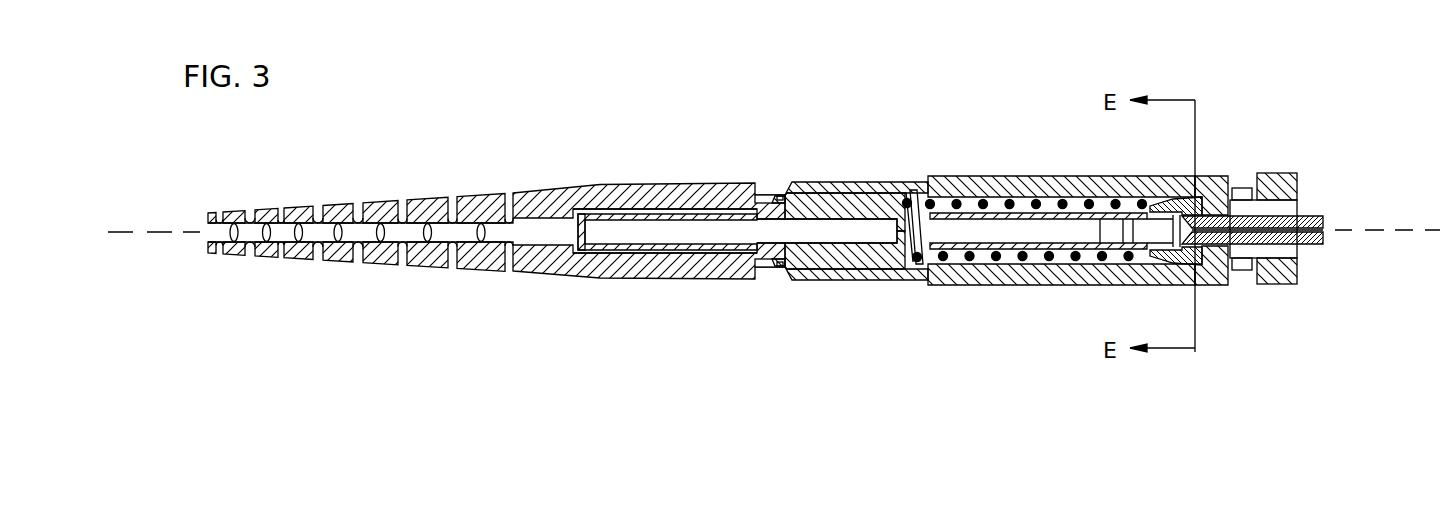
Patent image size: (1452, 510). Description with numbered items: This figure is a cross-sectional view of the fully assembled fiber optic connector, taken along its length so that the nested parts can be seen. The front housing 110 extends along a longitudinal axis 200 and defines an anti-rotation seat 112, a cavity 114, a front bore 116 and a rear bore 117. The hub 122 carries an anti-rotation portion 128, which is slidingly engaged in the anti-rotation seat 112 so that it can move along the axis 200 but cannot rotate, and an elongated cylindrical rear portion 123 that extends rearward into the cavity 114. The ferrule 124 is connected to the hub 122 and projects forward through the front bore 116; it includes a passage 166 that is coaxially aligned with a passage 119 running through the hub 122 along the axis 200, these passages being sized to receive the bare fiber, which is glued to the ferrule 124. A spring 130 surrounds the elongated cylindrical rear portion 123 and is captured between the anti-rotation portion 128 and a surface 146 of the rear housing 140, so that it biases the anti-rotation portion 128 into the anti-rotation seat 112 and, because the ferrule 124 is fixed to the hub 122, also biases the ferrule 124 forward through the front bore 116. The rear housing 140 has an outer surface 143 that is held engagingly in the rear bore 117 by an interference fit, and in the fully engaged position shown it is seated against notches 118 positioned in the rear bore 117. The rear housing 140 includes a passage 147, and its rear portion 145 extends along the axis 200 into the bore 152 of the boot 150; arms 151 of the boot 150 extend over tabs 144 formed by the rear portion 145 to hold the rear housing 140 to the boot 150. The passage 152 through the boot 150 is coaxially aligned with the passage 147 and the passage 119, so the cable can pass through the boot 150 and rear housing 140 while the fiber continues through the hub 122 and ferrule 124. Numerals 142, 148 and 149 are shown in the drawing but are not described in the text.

The front housing 110 is at (1040, 282).
The anti-rotation seat 112 is at (1200, 200).
The cavity 114 is at (1101, 203).
The front bore 116 is at (1292, 206).
The rear bore 117 is at (916, 218).
The notches 118 is at (908, 192).
The passage 119 is at (1072, 238).
The hub 122 is at (1147, 251).
The elongated cylindrical rear portion 123 is at (1065, 205).
The ferrule 124 is at (1318, 243).
The anti-rotation portion 128 is at (1208, 253).
The spring 130 is at (1078, 254).
The rear housing 140 is at (810, 253).
The outer sleeve 142 is at (882, 200).
The outer surface 143 is at (838, 194).
The tabs 144 is at (773, 197).
The rear portion 145 is at (672, 212).
The surface 146 is at (921, 262).
The passage 147 is at (852, 236).
The end wall 148 is at (578, 234).
The tube 149 is at (610, 248).
The boot 150 is at (578, 198).
The arms 151 is at (782, 196).
The bore 152 is at (497, 232).
The passage 166 is at (1300, 236).
The longitudinal axis 200 is at (160, 231).